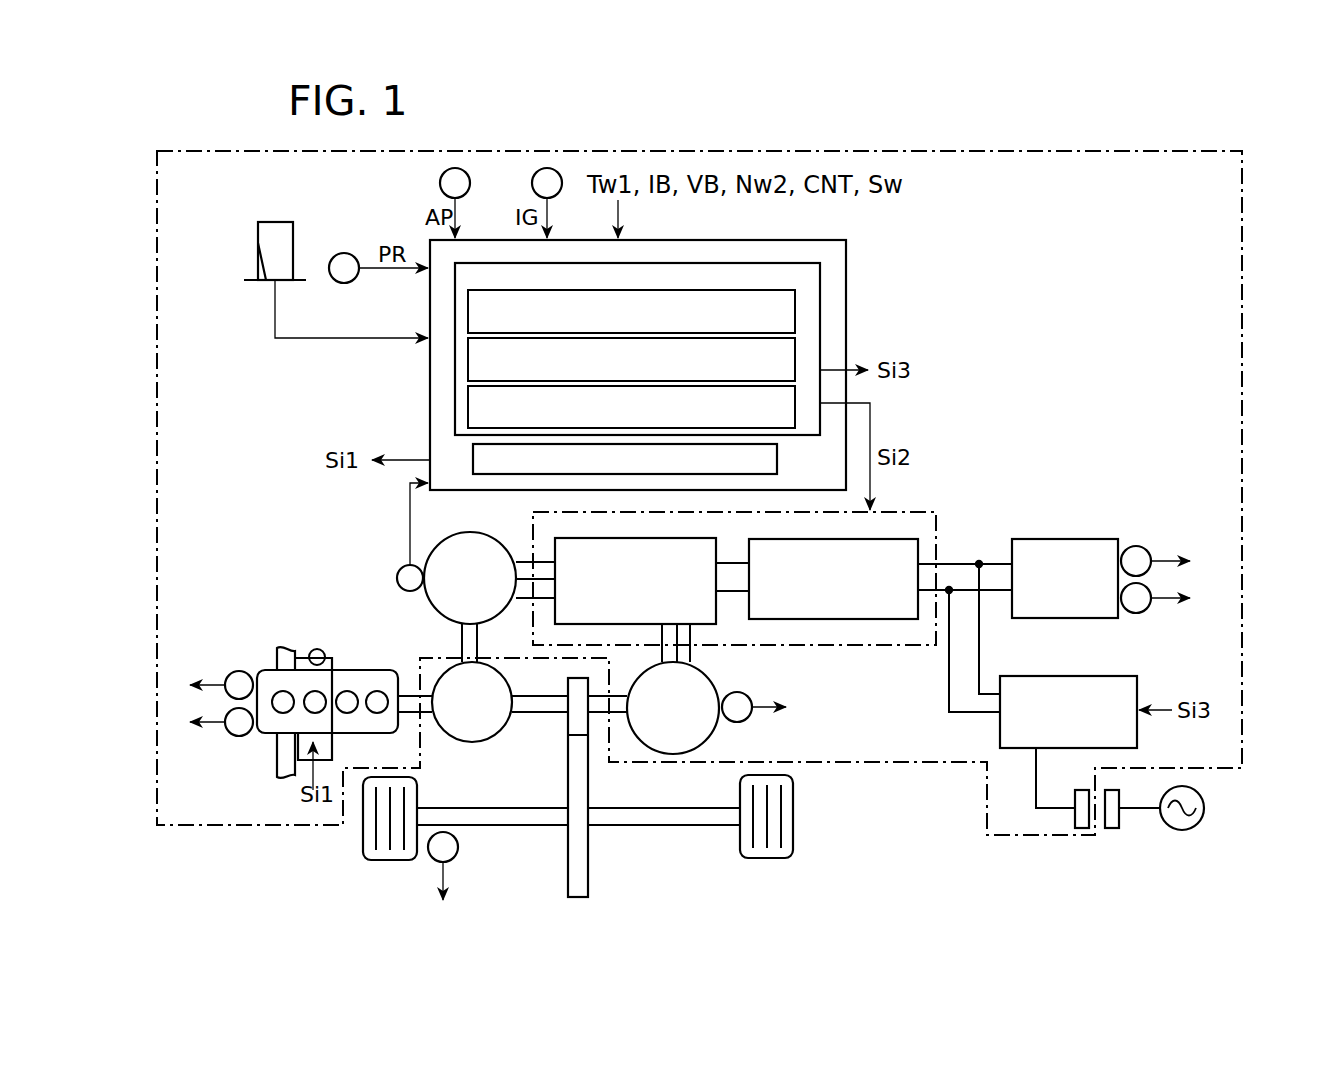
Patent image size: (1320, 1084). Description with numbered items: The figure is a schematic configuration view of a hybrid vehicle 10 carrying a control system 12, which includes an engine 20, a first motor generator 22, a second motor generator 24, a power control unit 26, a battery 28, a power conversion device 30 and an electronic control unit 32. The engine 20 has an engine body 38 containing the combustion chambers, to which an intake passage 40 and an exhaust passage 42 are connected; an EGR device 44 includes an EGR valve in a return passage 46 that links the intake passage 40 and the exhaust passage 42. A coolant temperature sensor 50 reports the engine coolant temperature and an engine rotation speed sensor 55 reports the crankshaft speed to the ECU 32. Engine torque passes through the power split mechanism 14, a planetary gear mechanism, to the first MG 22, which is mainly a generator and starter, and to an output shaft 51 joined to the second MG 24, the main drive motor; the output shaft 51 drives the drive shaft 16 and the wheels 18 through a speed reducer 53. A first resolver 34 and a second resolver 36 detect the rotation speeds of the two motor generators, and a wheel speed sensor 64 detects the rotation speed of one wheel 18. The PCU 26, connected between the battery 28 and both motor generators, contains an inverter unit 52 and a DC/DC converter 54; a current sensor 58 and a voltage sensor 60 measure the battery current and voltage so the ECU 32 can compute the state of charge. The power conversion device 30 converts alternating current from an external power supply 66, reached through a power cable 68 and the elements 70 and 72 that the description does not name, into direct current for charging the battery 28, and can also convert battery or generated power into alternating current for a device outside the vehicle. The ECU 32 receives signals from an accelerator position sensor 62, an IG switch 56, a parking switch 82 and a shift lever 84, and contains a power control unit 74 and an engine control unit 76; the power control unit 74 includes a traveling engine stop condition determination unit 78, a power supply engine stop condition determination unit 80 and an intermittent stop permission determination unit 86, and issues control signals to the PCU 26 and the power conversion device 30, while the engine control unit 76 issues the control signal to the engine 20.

The hybrid vehicle 10 is at (910, 140).
The control system 12 is at (783, 149).
The power split mechanism 14 is at (496, 738).
The drive shaft 16 is at (664, 828).
The wheels 18 is at (362, 840).
The engine 20 is at (351, 664).
The first motor generator 22 is at (470, 532).
The second motor generator 24 is at (712, 678).
The power control unit 26 is at (759, 551).
The battery 28 is at (1075, 539).
The power conversion device 30 is at (1078, 676).
The electronic control unit 32 is at (649, 364).
The first resolver 34 is at (397, 578).
The second resolver 36 is at (742, 722).
The engine body 38 is at (392, 727).
The intake passage 40 is at (270, 646).
The exhaust passage 42 is at (275, 764).
The EGR device 44 is at (323, 651).
The return passage 46 is at (334, 747).
The coolant temperature sensor 50 is at (240, 671).
The output shaft 51 is at (535, 713).
The inverter unit 52 is at (672, 537).
The speed reducer 53 is at (568, 862).
The DC/DC converter 54 is at (885, 538).
The engine rotation speed sensor 55 is at (237, 737).
The IG switch 56 is at (532, 183).
The current sensor 58 is at (1141, 546).
The voltage sensor 60 is at (1140, 613).
The accelerator position sensor 62 is at (440, 183).
The wheel speed sensor 64 is at (458, 846).
The external power supply 66 is at (1204, 808).
The power cable 68 is at (1143, 810).
The charging plug 70 is at (1112, 829).
The charging inlet 72 is at (1080, 829).
The power control unit 74 is at (820, 310).
The engine control unit 76 is at (777, 455).
The traveling engine stop condition determination unit 78 is at (467, 307).
The power supply engine stop condition determination unit 80 is at (467, 357).
The parking switch 82 is at (342, 253).
The shift lever 84 is at (257, 250).
The intermittent stop permission determination unit 86 is at (467, 407).